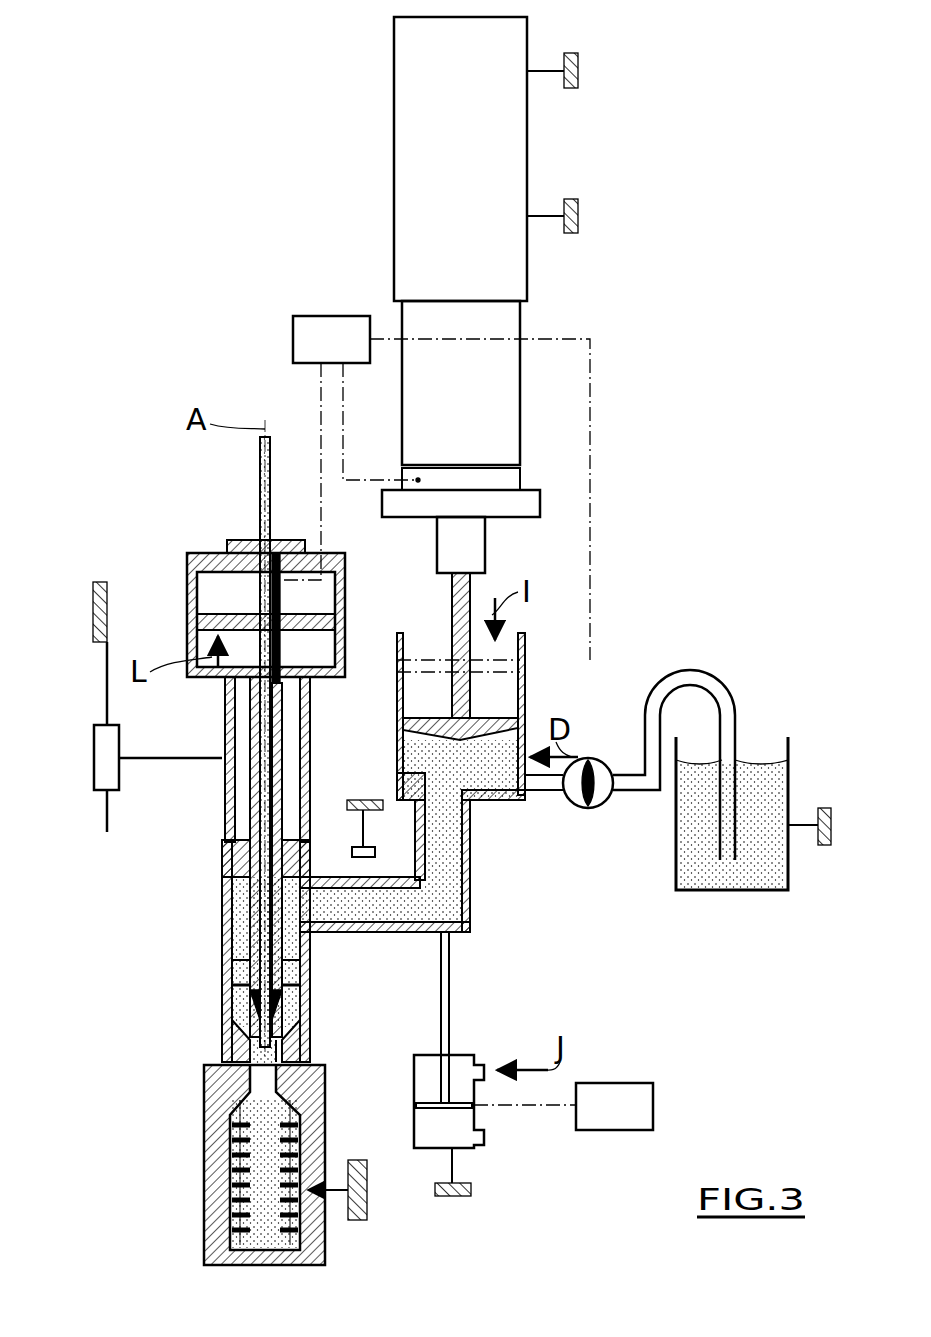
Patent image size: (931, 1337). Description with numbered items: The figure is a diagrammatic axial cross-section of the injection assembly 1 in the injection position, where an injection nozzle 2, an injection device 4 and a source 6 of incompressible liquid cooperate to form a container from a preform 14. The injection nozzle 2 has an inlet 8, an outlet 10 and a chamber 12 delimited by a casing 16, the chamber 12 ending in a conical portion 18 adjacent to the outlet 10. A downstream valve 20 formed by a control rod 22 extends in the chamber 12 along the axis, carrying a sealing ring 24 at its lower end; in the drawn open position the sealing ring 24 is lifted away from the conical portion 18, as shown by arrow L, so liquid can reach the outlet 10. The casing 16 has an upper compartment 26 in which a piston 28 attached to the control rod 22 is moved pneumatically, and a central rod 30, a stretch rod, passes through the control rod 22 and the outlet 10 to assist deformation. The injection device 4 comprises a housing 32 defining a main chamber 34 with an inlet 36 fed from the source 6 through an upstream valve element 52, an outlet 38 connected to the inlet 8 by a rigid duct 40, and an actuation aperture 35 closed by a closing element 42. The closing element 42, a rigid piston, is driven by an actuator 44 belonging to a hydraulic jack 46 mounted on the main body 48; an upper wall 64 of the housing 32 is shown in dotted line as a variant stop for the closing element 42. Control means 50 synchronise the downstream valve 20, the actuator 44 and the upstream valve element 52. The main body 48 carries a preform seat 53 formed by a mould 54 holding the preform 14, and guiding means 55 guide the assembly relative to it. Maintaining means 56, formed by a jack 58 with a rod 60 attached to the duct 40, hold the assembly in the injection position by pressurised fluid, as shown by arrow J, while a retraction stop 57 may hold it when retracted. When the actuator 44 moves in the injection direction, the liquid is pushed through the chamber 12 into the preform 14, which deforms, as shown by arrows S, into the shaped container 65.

The injection assembly 1 is at (150, 490).
The injection nozzle 2 is at (210, 990).
The injection device 4 is at (525, 662).
The source of incompressible liquid 6 is at (735, 880).
The inlet 8 is at (305, 905).
The outlet 10 is at (250, 1072).
The chamber 12 is at (228, 893).
The preform 14 is at (232, 1183).
The casing 16 is at (300, 985).
The conical portion 18 is at (292, 1042).
The downstream valve 20 is at (228, 936).
The control rod 22 is at (228, 968).
The sealing ring 24 is at (232, 1022).
The upper compartment 26 is at (215, 597).
The piston 28 is at (197, 628).
The central rod 30 is at (262, 482).
The housing 32 is at (400, 715).
The main chamber 34 is at (402, 742).
The actuation aperture 35 is at (402, 650).
The inlet 36 is at (525, 798).
The outlet 38 is at (440, 808).
The rigid duct 40 is at (440, 932).
The closing element 42 is at (485, 722).
The actuator 44 is at (470, 590).
The hydraulic jack 46 is at (515, 325).
The main body 48 is at (578, 208).
The control means 50 is at (466, 723).
The upstream valve element 52 is at (600, 805).
The preform seat 53 is at (242, 1100).
The mould 54 is at (310, 1248).
The guiding means 55 is at (100, 765).
The maintaining means 56 is at (480, 1120).
The retraction stop 57 is at (352, 851).
The pneumatic or hydraulic jack 58 is at (462, 1062).
The rod 60 is at (448, 992).
The upper wall 64 is at (418, 660).
The shaped container 65 is at (300, 1140).
The arrows S is at (233, 1238).